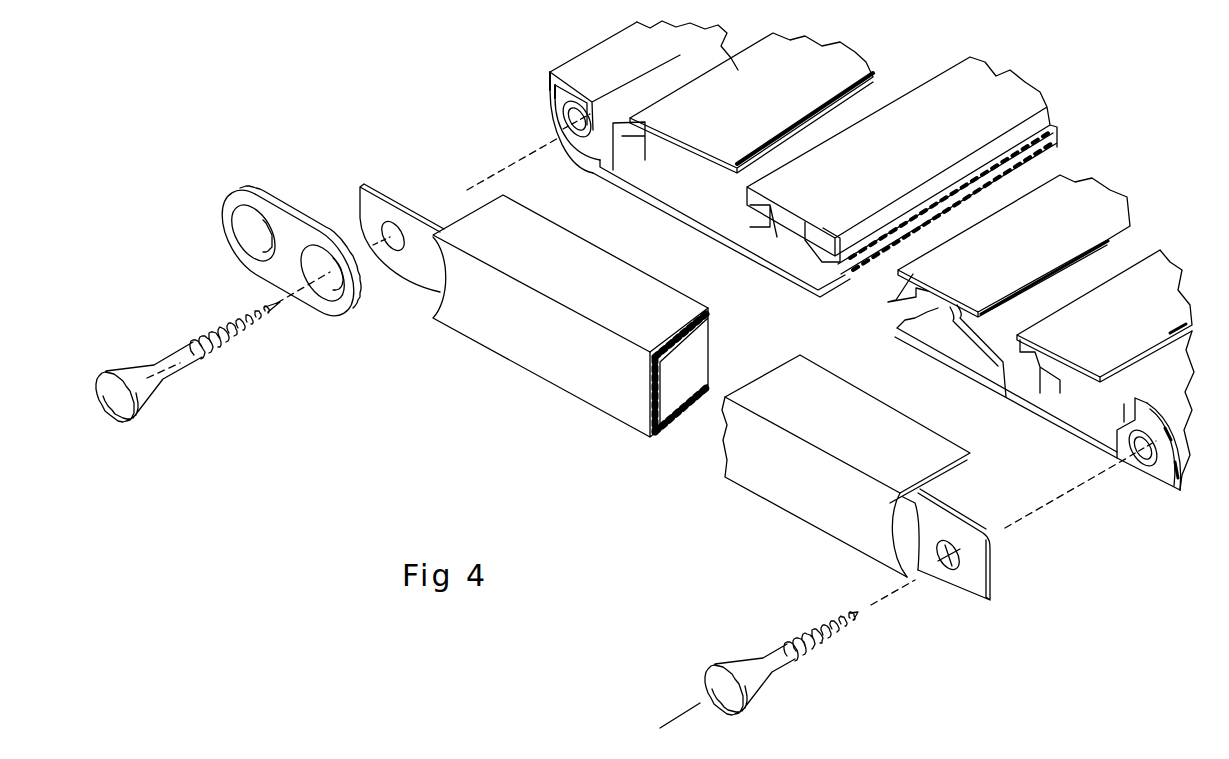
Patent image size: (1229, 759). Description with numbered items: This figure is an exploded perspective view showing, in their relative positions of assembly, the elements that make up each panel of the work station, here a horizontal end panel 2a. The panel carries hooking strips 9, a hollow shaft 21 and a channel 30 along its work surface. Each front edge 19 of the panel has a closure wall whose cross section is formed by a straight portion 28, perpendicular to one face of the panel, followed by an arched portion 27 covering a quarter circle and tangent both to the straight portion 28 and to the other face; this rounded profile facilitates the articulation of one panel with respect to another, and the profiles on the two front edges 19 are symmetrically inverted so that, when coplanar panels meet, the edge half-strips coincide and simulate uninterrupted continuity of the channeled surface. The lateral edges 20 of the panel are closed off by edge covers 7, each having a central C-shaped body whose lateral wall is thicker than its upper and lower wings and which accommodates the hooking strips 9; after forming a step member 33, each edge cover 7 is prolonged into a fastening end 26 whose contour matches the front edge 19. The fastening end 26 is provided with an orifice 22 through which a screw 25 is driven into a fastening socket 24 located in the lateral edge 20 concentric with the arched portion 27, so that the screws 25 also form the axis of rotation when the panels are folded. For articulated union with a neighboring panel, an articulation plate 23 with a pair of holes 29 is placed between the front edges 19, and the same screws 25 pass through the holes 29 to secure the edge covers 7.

The horizontal end panel 2a is at (905, 165).
The edge cover 7 is at (540, 338).
The hooking strip 9 is at (1035, 233).
The front edge 19 is at (562, 52).
The lateral edge 20 is at (687, 230).
The hollow shaft 21 is at (783, 238).
The orifices of edge covers 22 is at (393, 237).
The articulation member or plate 23 is at (293, 233).
The fastening socket 24 is at (575, 102).
The screw 25 is at (167, 368).
The fastening end 26 is at (424, 263).
The arched portion of front edge 27 is at (567, 147).
The straight portion of front edge 28 is at (553, 92).
The holes in the plate 29 is at (323, 272).
The channel 30 is at (833, 122).
The step member of edge cover 33 is at (895, 535).